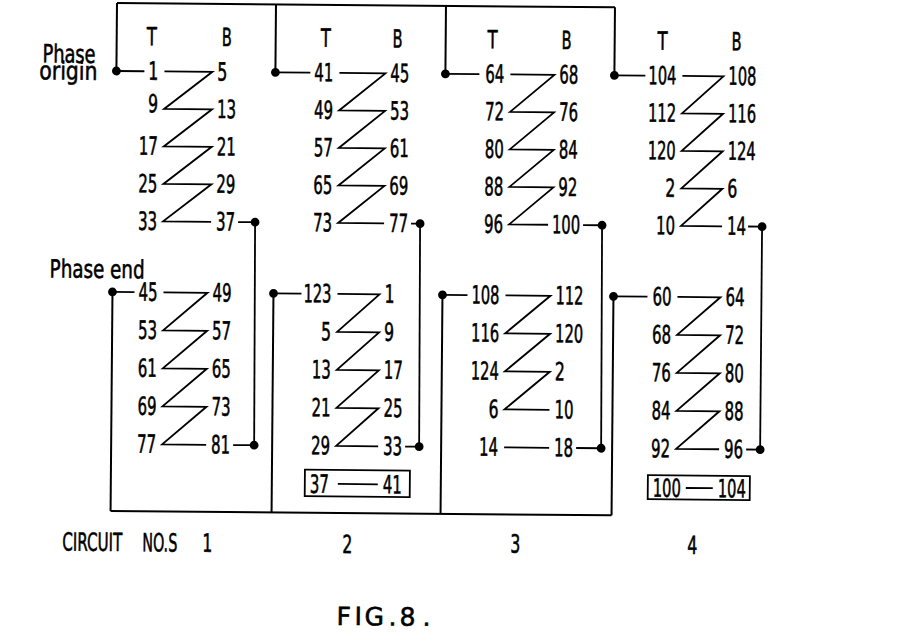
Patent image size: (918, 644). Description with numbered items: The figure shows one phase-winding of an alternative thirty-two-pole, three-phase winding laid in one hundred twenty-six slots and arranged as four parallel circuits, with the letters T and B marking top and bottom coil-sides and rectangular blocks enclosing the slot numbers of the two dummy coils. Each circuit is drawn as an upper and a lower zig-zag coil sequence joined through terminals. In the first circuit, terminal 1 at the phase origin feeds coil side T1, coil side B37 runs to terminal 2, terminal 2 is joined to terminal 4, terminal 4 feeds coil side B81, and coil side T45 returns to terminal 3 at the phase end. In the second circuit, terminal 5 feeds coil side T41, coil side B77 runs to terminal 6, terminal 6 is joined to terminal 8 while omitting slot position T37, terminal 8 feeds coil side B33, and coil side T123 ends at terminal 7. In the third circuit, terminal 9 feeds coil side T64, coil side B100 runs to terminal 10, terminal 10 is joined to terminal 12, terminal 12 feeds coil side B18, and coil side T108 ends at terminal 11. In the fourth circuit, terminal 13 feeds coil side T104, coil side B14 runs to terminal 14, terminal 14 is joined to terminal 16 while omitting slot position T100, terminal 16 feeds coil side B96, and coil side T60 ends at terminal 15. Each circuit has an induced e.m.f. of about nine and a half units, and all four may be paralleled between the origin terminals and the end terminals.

The terminal 1 is at (117, 71).
The terminal 2 is at (257, 221).
The terminal 3 is at (115, 292).
The terminal 4 is at (258, 444).
The terminal 5 is at (276, 71).
The terminal 6 is at (422, 221).
The terminal 7 is at (276, 292).
The terminal 8 is at (423, 444).
The terminal 9 is at (446, 71).
The terminal 10 is at (604, 221).
The terminal 11 is at (445, 292).
The terminal 12 is at (605, 444).
The terminal 13 is at (615, 71).
The terminal 14 is at (764, 221).
The terminal 15 is at (616, 292).
The terminal 16 is at (764, 444).